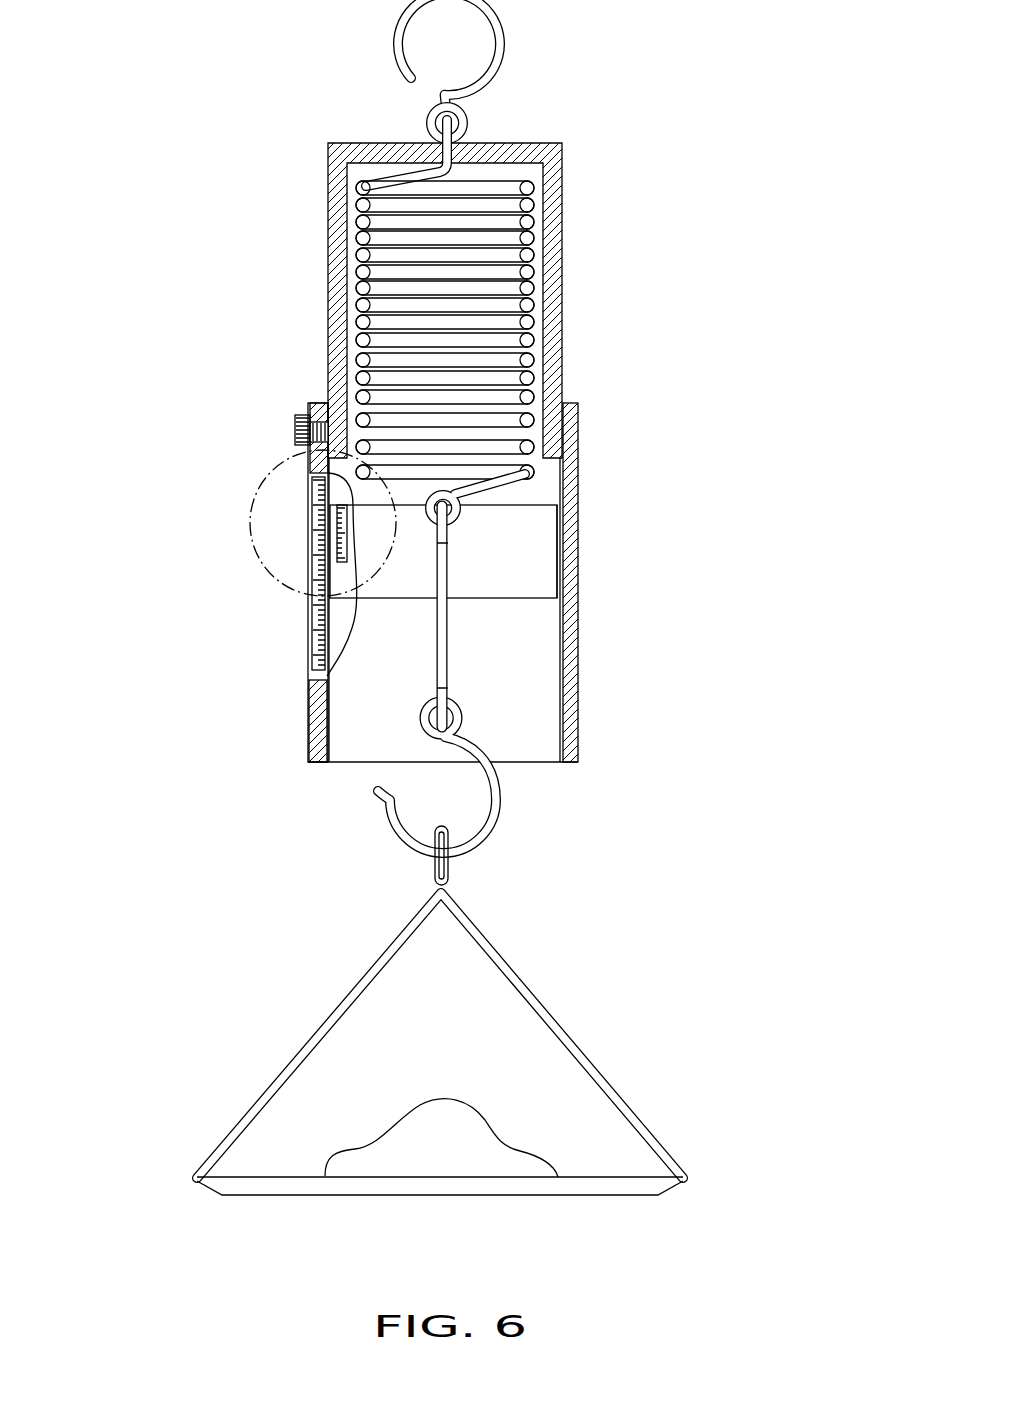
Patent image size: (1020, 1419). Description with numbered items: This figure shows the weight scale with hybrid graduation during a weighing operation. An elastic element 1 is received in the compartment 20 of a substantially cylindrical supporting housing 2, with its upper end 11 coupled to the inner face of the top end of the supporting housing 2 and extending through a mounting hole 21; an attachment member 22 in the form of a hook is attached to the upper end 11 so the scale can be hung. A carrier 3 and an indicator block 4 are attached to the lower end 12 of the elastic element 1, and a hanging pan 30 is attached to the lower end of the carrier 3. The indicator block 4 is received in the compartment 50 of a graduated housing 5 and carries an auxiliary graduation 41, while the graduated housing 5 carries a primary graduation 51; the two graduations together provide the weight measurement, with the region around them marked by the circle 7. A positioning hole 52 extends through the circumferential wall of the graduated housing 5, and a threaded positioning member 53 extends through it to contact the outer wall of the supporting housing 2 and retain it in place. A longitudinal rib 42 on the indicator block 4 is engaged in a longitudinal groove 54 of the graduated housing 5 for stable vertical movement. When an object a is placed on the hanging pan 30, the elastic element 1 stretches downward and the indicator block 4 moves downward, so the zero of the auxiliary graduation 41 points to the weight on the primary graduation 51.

The elastic element 1 is at (545, 256).
The supporting housing 2 is at (341, 143).
The carrier 3 is at (470, 624).
The indicator block 4 is at (545, 578).
The graduated housing 5 is at (290, 714).
The enlarged portion 7 is at (252, 520).
The upper end of the elastic element 11 is at (388, 143).
The lower end of the elastic element 12 is at (478, 485).
The compartment 20 is at (538, 470).
The mounting hole 21 is at (470, 130).
The attachment member 22 is at (500, 38).
The hanging pan 30 is at (541, 1003).
The auxiliary graduation 41 is at (338, 498).
The longitudinal rib 42 is at (566, 507).
The compartment 50 is at (347, 751).
The primary graduation 51 is at (323, 599).
The positioning hole 52 is at (313, 403).
The positioning member 53 is at (296, 426).
The longitudinal groove 54 is at (566, 403).
The object a is at (516, 1160).